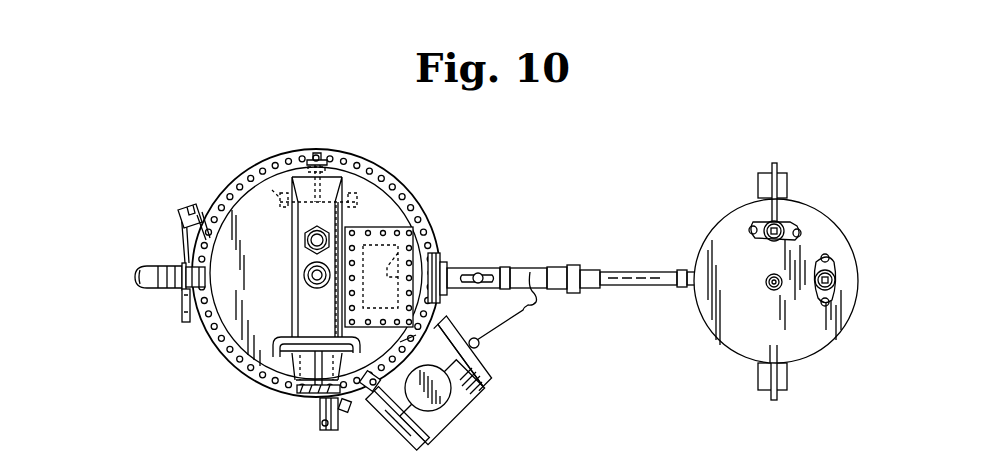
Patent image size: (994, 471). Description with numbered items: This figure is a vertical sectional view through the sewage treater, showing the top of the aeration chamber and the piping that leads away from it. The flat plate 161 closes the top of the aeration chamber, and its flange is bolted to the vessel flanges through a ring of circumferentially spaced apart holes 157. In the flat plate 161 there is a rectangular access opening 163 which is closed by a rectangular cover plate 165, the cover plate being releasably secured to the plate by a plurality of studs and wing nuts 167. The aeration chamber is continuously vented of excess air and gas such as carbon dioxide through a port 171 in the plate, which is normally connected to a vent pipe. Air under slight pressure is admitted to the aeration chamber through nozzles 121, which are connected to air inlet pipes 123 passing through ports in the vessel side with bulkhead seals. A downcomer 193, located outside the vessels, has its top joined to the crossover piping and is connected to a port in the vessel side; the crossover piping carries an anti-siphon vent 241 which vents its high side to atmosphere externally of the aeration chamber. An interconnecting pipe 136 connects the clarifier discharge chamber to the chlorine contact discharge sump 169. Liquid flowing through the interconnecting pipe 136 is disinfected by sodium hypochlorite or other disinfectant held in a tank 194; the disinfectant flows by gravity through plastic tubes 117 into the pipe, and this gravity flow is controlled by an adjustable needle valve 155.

The plastic tubes 117 is at (534, 308).
The nozzles 121 is at (243, 167).
The air inlet pipes 123 is at (315, 368).
The interconnecting pipe 136 is at (497, 268).
The adjustable needle valve 155 is at (479, 345).
The holes 157 is at (348, 158).
The flat plate 161 is at (276, 295).
The rectangular access opening 163 is at (436, 248).
The rectangular cover plate 165 is at (383, 228).
The studs and wing nuts 167 is at (372, 377).
The chlorine contact discharge sump 169 is at (752, 284).
The port 171 is at (304, 273).
The downcomer 193 is at (137, 272).
The tank 194 is at (470, 398).
The anti-siphon vent 241 is at (305, 241).